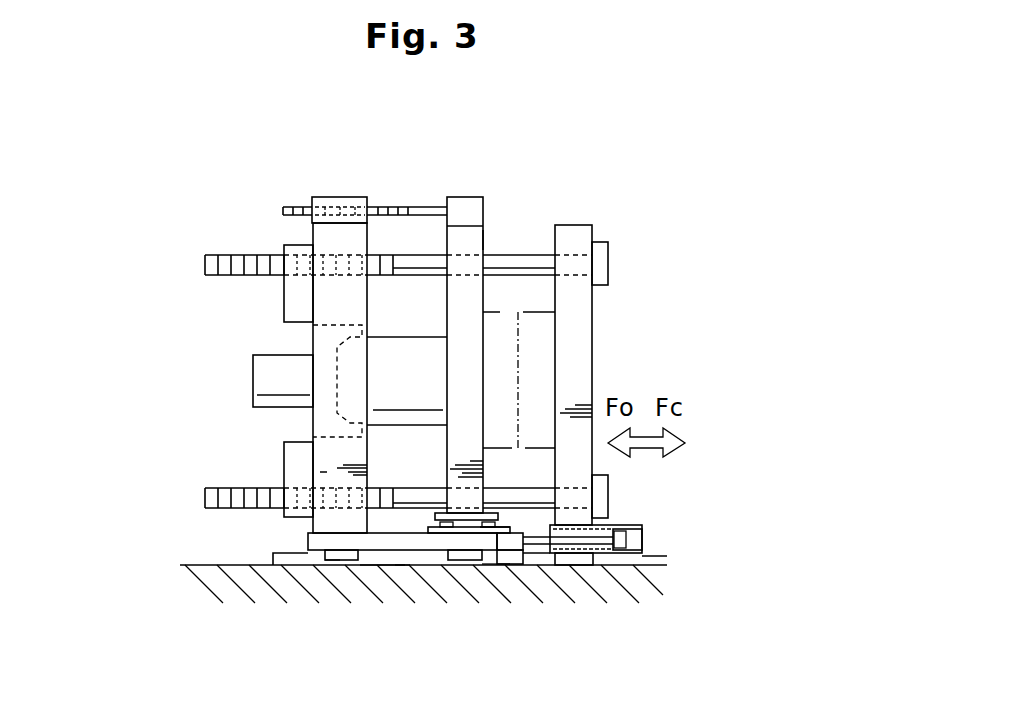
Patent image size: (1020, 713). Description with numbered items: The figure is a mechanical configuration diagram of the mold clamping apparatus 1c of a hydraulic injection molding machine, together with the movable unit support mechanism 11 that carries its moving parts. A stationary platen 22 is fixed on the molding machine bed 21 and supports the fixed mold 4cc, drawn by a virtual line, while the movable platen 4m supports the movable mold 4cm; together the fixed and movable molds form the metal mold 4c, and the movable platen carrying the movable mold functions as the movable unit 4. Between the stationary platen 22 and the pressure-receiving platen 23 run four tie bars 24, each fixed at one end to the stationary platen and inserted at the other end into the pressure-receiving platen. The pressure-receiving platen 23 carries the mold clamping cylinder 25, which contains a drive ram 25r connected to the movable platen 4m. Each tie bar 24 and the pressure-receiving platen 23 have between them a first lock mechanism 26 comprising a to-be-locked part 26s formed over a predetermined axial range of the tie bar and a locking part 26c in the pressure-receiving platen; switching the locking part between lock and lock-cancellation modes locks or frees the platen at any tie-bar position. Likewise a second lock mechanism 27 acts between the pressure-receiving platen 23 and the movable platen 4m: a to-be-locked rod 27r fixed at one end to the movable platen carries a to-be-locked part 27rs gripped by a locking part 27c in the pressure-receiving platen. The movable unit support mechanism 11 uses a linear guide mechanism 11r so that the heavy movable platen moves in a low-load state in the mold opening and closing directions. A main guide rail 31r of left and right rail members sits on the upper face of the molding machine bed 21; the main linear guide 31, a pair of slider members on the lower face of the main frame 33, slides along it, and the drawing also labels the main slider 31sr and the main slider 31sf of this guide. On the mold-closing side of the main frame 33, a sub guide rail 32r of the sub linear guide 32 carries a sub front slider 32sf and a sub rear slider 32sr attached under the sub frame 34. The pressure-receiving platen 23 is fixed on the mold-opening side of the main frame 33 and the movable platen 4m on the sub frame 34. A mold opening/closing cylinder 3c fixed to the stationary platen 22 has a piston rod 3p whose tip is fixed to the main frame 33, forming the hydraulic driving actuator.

The mold clamping apparatus 1c is at (630, 204).
The mold opening/closing cylinder 3c is at (619, 589).
The piston rod 3p is at (610, 565).
The movable unit 4 is at (490, 175).
The movable platen 4m is at (483, 238).
The movable mold 4cm is at (497, 312).
The fixed mold 4cc is at (537, 310).
The metal mold 4c is at (563, 357).
The movable unit support mechanism 11 is at (272, 535).
The linear guide mechanism 11r is at (373, 566).
The molding machine bed 21 is at (647, 558).
The stationary platen 22 is at (592, 322).
The pressure-receiving platen 23 is at (313, 420).
The tie bar 24 is at (414, 253).
The mold clamping cylinder 25 is at (300, 341).
The drive ram 25r is at (380, 337).
The first lock mechanism 26 is at (261, 402).
The locking part 26c is at (290, 244).
The to-be-locked part 26s is at (261, 364).
The second lock mechanism 27 is at (361, 169).
The locking part 27c is at (340, 197).
The to-be-locked part 27rs is at (297, 207).
The to-be-locked rod 27r is at (395, 206).
The main linear guide 31 is at (472, 571).
The rear sliding surface of foot 31sr is at (330, 566).
The front sliding surface of foot 31sf is at (403, 567).
The main guide rail 31r is at (503, 566).
The support plate 32 is at (508, 514).
The sub front slider 32sf is at (510, 528).
The sub rear slider 32sr is at (397, 571).
The sub guide rail 32r is at (487, 566).
The main frame 33 is at (553, 566).
The sub frame 34 is at (463, 513).